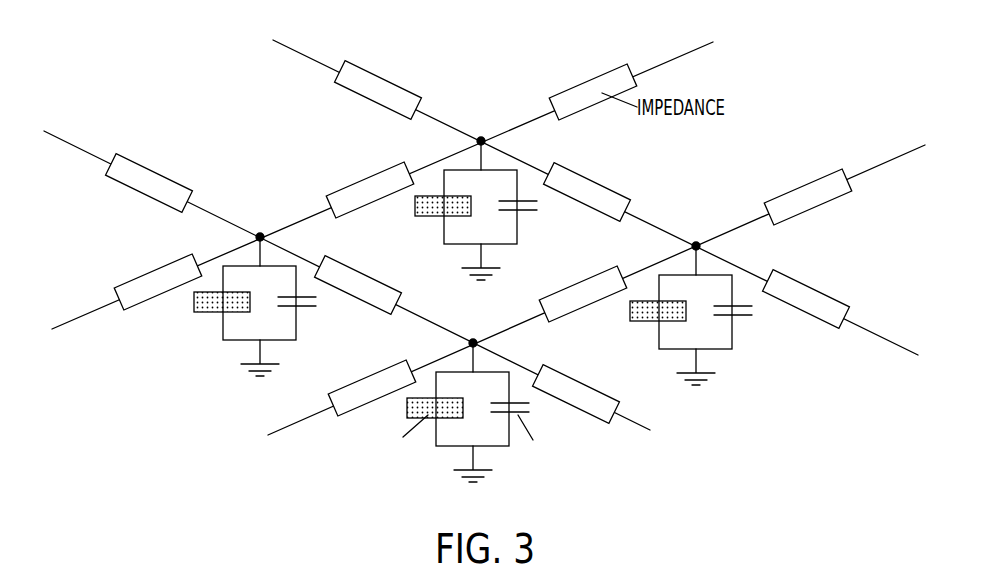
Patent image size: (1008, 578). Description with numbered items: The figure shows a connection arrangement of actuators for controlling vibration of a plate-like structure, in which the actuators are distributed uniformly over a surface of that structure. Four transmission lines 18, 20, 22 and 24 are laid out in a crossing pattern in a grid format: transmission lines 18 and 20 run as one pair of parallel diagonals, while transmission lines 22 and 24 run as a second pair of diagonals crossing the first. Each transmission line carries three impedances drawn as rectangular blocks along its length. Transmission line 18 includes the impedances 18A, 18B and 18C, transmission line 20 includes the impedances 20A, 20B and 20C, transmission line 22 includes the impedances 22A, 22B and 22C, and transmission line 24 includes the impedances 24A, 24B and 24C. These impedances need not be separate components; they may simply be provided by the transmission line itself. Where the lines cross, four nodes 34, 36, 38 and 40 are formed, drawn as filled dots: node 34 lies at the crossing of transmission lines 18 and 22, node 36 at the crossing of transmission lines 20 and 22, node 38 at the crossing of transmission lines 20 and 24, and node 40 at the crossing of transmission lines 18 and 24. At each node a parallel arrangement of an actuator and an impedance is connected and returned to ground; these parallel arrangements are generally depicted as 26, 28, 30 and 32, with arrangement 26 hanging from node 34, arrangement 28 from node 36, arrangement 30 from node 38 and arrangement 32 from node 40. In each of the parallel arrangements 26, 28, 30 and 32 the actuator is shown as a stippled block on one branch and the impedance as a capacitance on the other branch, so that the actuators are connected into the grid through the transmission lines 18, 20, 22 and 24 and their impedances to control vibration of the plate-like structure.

The transmission line 18 is at (305, 52).
The impedance 18A is at (375, 73).
The impedance 18B is at (588, 187).
The impedance 18C is at (804, 280).
The transmission line 20 is at (70, 142).
The impedance 20A is at (148, 172).
The impedance 20B is at (350, 268).
The impedance 20C is at (568, 382).
The transmission line 22 is at (92, 311).
The impedance 22A is at (130, 283).
The impedance 22B is at (346, 190).
The impedance 22C is at (572, 95).
The transmission line 24 is at (270, 432).
The impedance 24A is at (347, 390).
The impedance 24B is at (560, 293).
The impedance 24C is at (792, 195).
The parallel arrangement of actuator and impedance 26 is at (445, 178).
The parallel arrangement of actuator and impedance 28 is at (223, 335).
The parallel arrangement of actuator and impedance 30 is at (478, 446).
The parallel arrangement of actuator and impedance 32 is at (732, 333).
The node 34 is at (481, 141).
The node 36 is at (260, 237).
The node 38 is at (473, 343).
The node 40 is at (696, 246).